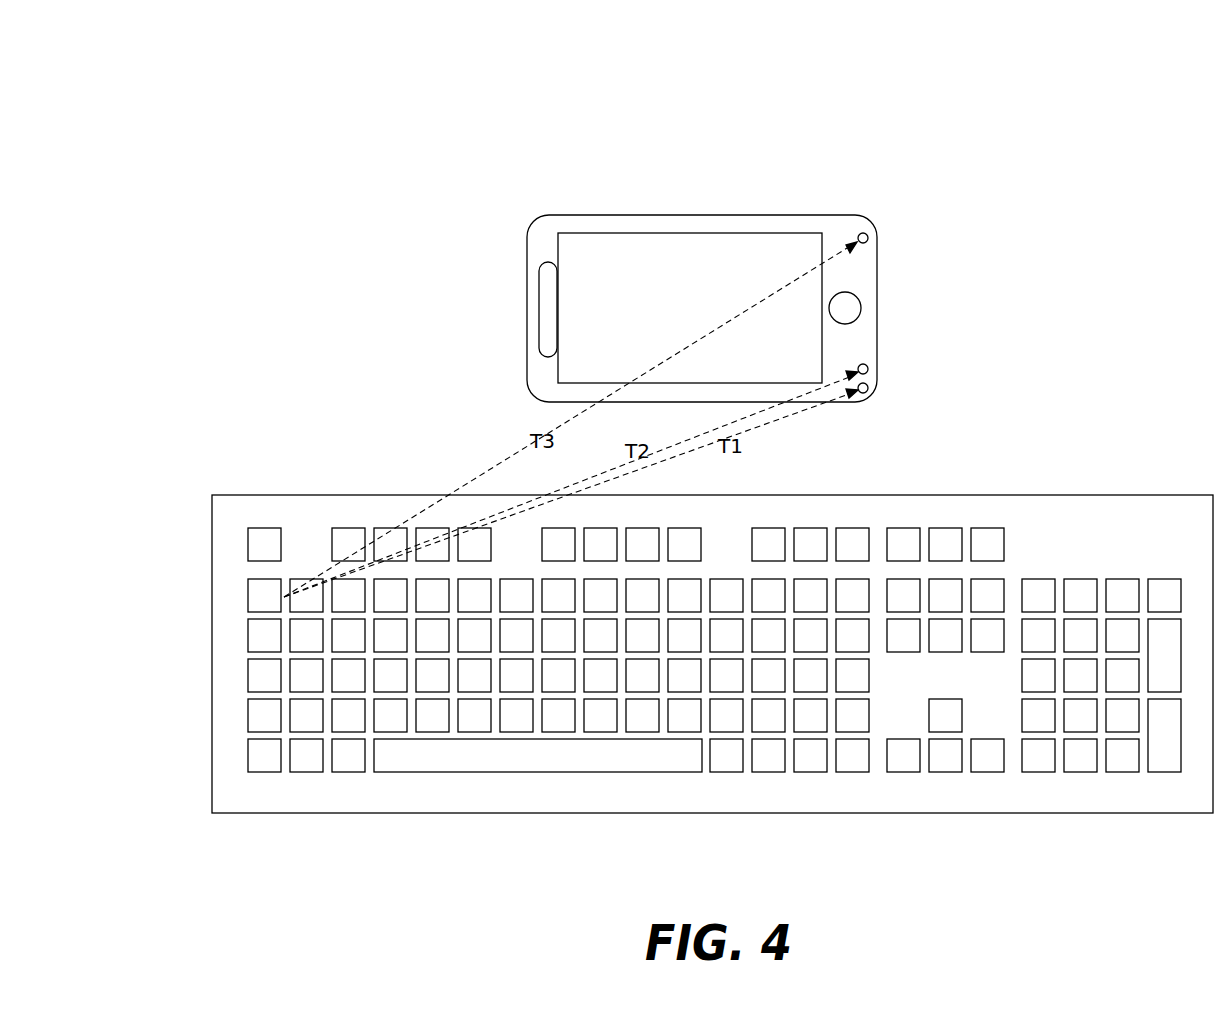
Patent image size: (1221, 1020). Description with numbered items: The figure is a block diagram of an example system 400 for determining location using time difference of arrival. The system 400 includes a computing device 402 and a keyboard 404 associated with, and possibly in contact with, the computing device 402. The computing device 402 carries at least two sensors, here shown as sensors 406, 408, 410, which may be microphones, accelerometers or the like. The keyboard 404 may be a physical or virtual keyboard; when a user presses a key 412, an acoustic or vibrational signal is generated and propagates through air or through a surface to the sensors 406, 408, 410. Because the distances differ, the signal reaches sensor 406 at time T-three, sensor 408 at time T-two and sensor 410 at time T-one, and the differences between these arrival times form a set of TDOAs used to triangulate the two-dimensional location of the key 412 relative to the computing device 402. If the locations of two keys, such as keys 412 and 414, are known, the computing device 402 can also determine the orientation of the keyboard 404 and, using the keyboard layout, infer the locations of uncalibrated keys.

The system 400 is at (206, 75).
The computing device 402 is at (527, 241).
The keyboard 404 is at (212, 531).
The sensor 406 is at (868, 238).
The sensor 408 is at (868, 370).
The sensor 410 is at (868, 389).
The key 412 is at (248, 601).
The key 414 is at (862, 761).